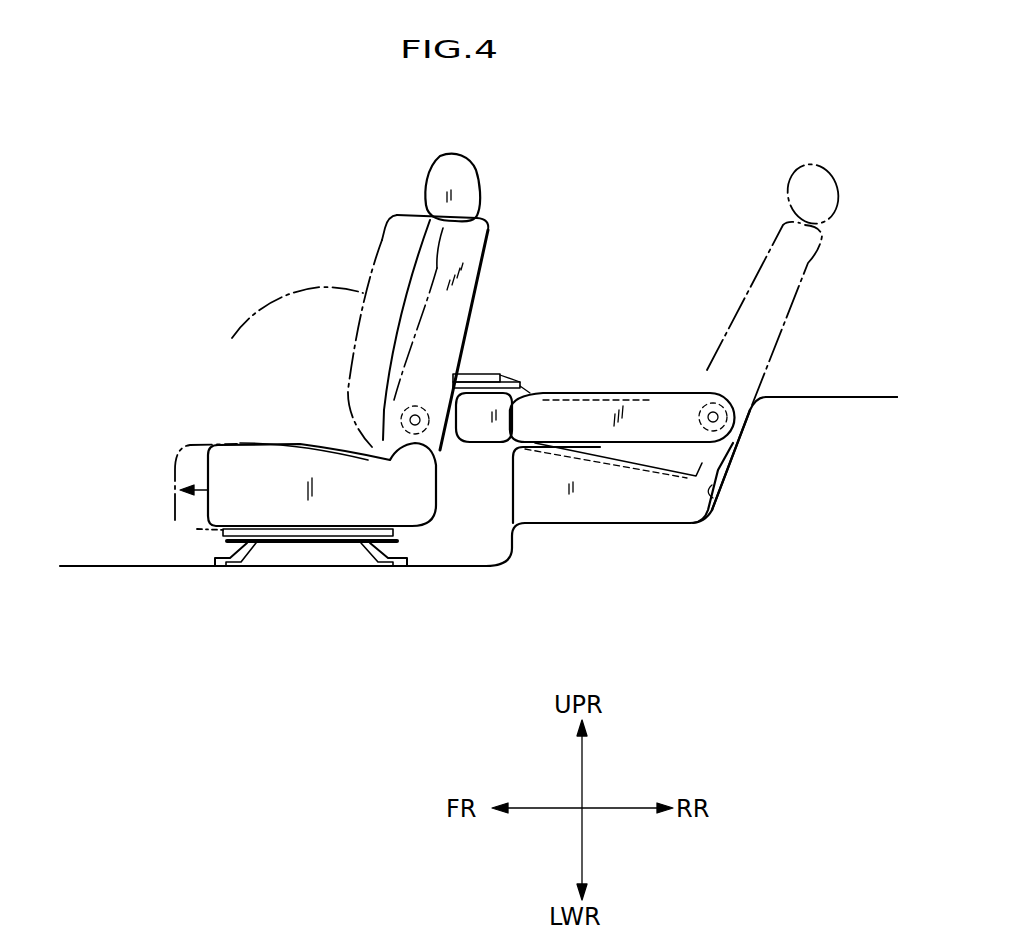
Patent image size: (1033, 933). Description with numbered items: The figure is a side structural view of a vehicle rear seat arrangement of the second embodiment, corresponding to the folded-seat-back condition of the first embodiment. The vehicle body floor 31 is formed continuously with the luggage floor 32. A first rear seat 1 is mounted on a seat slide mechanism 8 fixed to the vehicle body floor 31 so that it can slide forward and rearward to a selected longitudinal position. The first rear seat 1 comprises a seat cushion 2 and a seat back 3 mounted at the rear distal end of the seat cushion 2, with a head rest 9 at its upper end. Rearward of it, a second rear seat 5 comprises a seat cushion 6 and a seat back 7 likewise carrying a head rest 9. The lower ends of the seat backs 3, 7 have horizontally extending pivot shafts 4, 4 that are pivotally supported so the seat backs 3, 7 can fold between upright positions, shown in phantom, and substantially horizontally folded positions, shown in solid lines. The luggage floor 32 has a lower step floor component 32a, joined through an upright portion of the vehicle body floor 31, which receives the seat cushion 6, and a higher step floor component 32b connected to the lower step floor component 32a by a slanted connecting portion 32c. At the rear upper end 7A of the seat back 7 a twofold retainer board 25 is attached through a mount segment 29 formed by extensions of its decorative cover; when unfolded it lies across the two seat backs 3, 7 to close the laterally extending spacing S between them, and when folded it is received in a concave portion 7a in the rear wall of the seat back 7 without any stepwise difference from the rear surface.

The first rear seat 1 is at (177, 320).
The seat cushion 2 is at (242, 428).
The seat back 3 is at (406, 320).
The pivot shaft 4 is at (410, 419).
The second rear seat 5 is at (682, 616).
The seat cushion 6 is at (605, 536).
The seat back 7 is at (677, 391).
The concave portion 7a is at (607, 394).
The rear upper end 7A is at (531, 411).
The seat slide mechanism 8 is at (300, 543).
The head rest 9 is at (463, 193).
The retainer board 25 is at (498, 366).
The mount segment 29 is at (533, 380).
The vehicle body floor 31 is at (114, 565).
The luggage floor 32 is at (866, 391).
The lower step floor component 32a is at (537, 523).
The higher step floor component 32b is at (784, 397).
The slanted connecting portion 32c is at (717, 500).
The spacing S is at (450, 450).